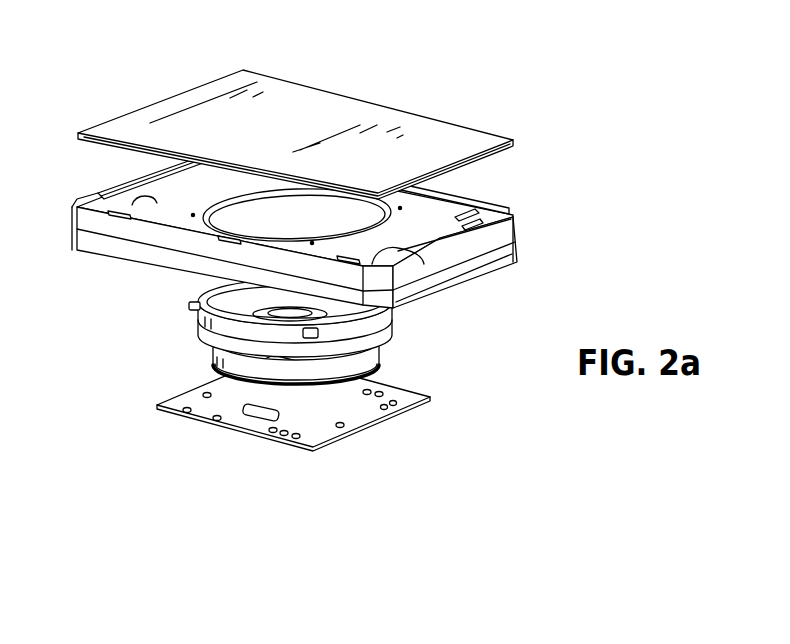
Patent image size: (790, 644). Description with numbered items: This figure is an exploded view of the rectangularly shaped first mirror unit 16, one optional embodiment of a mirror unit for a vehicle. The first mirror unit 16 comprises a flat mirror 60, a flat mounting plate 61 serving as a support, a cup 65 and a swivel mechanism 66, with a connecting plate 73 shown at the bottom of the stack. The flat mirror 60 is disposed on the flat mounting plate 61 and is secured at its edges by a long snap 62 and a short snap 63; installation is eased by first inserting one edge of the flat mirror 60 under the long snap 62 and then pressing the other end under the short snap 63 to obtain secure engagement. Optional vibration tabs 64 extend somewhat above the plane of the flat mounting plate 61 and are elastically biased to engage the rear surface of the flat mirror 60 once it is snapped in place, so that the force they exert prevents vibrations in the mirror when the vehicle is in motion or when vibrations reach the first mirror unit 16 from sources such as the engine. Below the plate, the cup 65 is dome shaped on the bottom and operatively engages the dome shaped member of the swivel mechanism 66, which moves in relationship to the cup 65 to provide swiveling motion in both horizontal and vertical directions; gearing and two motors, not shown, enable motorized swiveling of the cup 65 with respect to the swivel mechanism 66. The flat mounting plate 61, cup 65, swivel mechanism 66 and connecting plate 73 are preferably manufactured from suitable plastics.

The first mirror unit 16 is at (152, 87).
The flat mirror 60 is at (423, 128).
The flat mounting plate 61 is at (190, 247).
The long snap 62 is at (135, 176).
The short snap 63 is at (457, 236).
The vibration tabs 64 is at (157, 208).
The cup 65 is at (387, 322).
The swivel mechanism 66 is at (377, 368).
The connecting plate 73 is at (373, 427).